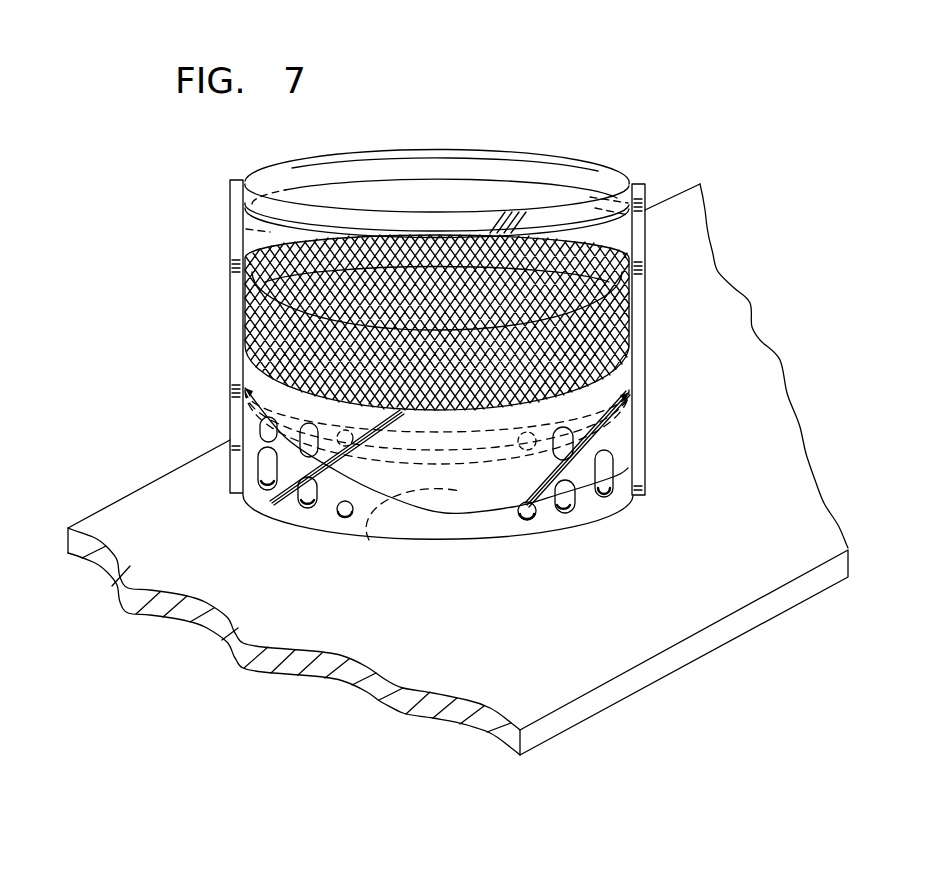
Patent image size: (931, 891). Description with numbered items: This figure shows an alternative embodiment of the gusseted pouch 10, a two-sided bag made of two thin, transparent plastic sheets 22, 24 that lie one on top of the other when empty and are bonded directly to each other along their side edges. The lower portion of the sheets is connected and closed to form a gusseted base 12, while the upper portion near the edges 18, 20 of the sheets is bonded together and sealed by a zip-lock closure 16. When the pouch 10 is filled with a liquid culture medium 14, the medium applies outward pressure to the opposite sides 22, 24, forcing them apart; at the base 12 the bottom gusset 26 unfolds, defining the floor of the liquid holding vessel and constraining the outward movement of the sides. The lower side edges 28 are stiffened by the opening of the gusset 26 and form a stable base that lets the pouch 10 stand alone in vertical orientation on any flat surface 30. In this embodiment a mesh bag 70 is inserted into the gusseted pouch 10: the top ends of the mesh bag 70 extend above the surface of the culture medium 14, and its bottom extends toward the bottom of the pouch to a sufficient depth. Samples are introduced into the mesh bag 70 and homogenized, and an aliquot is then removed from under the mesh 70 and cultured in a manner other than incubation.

The gusseted pouch 10 is at (196, 184).
The gusseted base 12 is at (216, 419).
The liquid culture medium 14 is at (248, 283).
The zip-lock closure 16 is at (498, 180).
The upper edge of first sheet 18 is at (592, 168).
The upper edge of second sheet 20 is at (371, 208).
The first transparent plastic sheet 22 is at (618, 243).
The second transparent plastic sheet 24 is at (243, 224).
The gusset 26 is at (369, 547).
The lower side edges 28 is at (478, 530).
The flat surface 30 is at (466, 652).
The mesh bag 70 is at (245, 338).